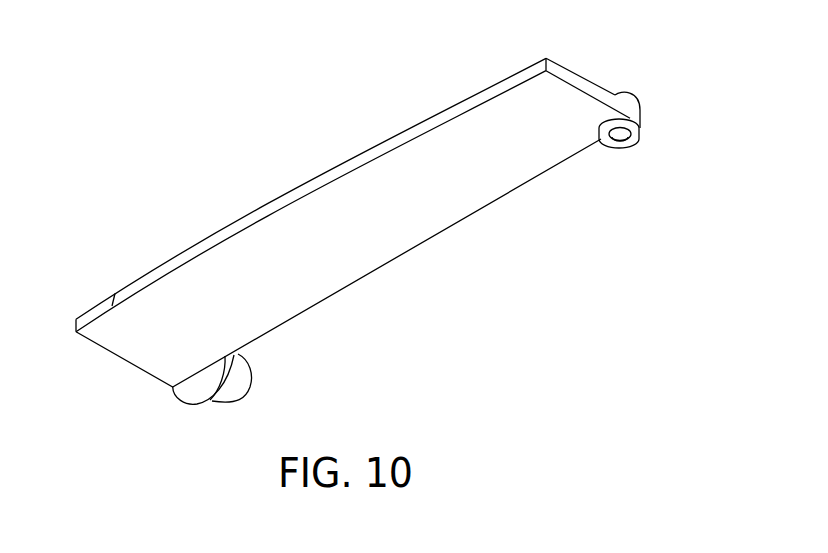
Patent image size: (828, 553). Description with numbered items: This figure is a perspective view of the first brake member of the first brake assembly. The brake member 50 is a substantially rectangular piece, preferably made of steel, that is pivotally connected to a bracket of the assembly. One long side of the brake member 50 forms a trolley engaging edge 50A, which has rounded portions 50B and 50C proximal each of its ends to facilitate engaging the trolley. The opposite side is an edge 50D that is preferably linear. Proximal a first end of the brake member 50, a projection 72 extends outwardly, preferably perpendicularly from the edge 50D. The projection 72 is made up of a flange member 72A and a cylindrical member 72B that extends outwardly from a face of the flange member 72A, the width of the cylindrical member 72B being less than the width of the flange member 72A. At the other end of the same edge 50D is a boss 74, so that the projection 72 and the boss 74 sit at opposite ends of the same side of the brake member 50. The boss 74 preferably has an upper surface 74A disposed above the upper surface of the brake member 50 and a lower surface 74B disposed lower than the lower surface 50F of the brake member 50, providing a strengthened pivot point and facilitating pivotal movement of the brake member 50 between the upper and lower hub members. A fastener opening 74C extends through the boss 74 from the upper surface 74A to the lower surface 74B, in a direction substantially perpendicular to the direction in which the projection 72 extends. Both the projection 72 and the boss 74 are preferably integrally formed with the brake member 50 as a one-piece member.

The brake member 50 is at (348, 206).
The trolley engaging edge 50A is at (283, 203).
The rounded portion 50B is at (489, 94).
The rounded portion 50C is at (92, 312).
The edge 50D is at (330, 297).
The lower surface 50F is at (408, 206).
The projection 72 is at (217, 408).
The flange member 72A is at (186, 406).
The cylindrical member 72B is at (222, 406).
The boss 74 is at (651, 119).
The upper surface 74A is at (628, 95).
The lower surface 74B is at (637, 147).
The fastener opening 74C is at (617, 140).